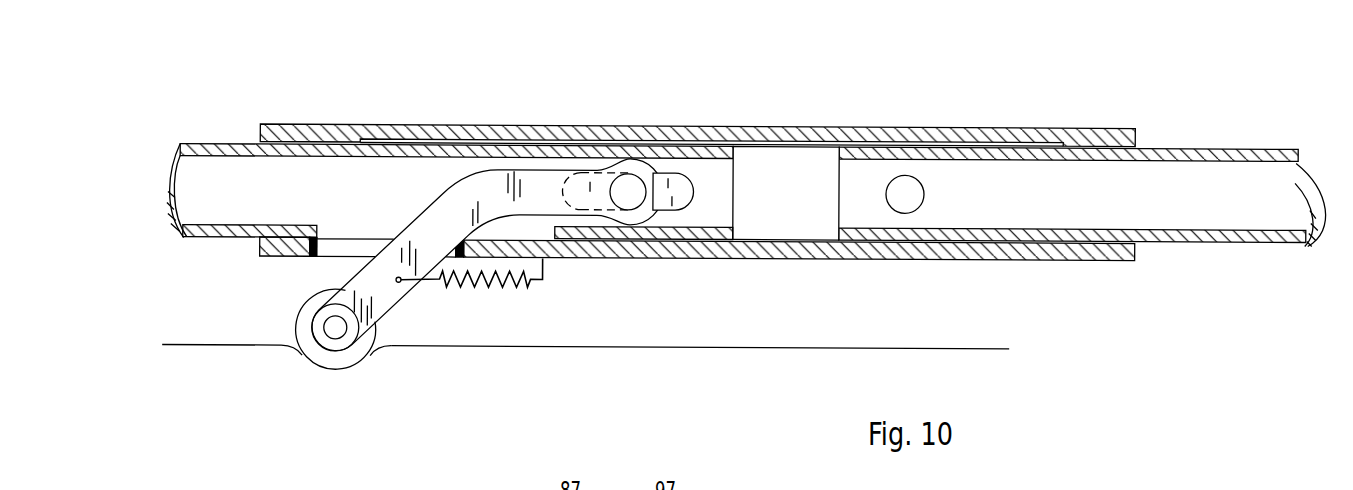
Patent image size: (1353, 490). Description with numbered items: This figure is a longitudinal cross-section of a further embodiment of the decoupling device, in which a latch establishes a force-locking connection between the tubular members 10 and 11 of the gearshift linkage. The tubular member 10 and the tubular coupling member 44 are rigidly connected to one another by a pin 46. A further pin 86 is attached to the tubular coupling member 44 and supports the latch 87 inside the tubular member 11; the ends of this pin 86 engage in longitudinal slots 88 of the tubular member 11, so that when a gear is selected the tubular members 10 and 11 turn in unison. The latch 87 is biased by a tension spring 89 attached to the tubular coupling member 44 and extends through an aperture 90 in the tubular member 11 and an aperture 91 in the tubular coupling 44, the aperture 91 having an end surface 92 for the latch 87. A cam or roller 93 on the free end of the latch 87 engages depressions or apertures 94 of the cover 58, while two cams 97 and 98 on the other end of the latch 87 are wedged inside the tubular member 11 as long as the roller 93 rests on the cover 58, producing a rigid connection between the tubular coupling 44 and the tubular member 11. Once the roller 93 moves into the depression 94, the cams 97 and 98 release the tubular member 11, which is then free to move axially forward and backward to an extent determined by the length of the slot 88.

The tubular member 10 is at (1204, 155).
The tubular member 11 is at (227, 148).
The tubular coupling member 44 is at (998, 128).
The pin 46 is at (906, 193).
The cover 58 is at (773, 349).
The pin 86 is at (632, 187).
The latch 87 is at (484, 178).
The longitudinal slots 88 is at (680, 187).
The tension spring 89 is at (457, 290).
The aperture 90 is at (374, 230).
The aperture 91 is at (333, 250).
The end surface 92 is at (487, 287).
The cam or roller 93 is at (334, 353).
The depressions or apertures 94 is at (367, 362).
The cam 97 is at (630, 157).
The cam 98 is at (632, 226).